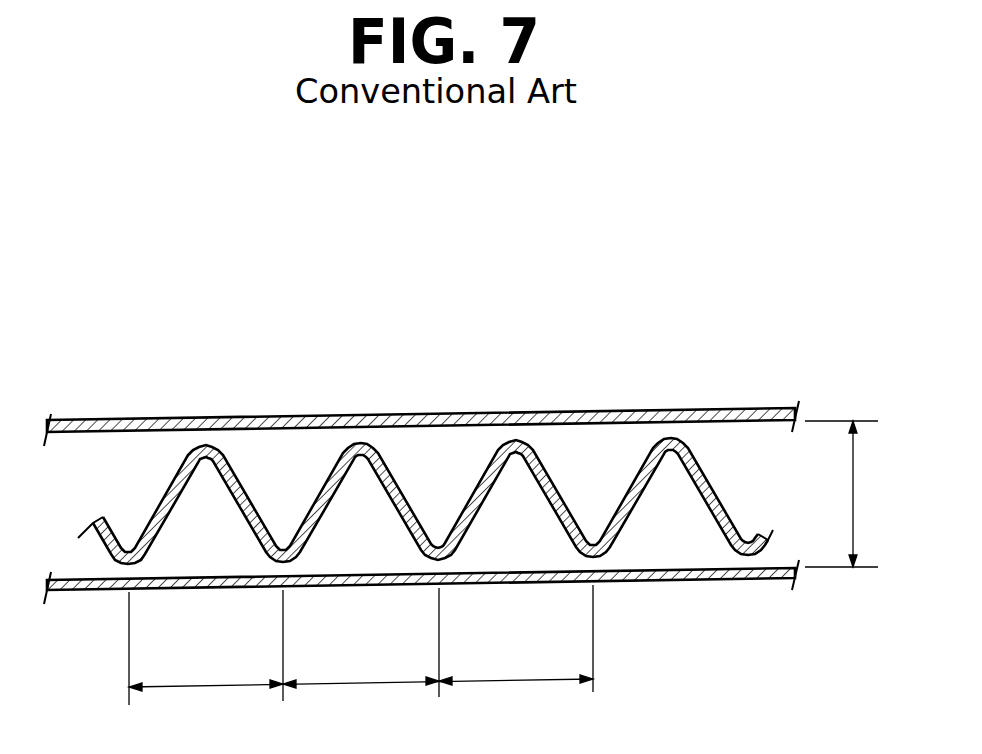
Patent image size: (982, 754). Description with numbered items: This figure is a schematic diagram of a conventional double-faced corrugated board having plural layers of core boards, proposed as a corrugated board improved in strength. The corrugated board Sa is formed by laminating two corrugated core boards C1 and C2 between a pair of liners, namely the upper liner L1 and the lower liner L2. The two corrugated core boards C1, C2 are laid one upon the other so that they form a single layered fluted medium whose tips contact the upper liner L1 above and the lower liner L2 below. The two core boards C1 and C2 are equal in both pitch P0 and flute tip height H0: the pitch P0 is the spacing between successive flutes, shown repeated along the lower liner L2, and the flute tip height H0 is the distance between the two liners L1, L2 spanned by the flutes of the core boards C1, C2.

The corrugated board Sa is at (140, 418).
The upper liner L1 is at (270, 420).
The lower liner L2 is at (684, 580).
The corrugated core board C1 is at (480, 478).
The corrugated core board C2 is at (500, 483).
The flute tip height H0 is at (856, 494).
The pitch P0 is at (361, 645).